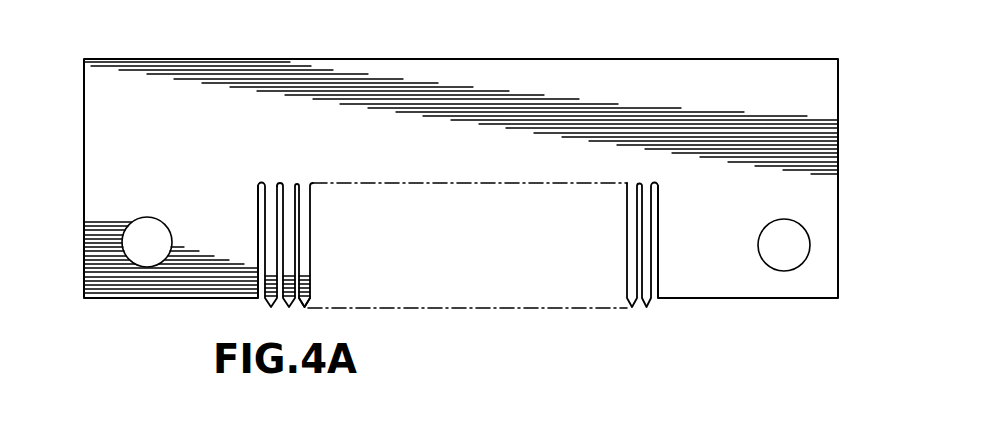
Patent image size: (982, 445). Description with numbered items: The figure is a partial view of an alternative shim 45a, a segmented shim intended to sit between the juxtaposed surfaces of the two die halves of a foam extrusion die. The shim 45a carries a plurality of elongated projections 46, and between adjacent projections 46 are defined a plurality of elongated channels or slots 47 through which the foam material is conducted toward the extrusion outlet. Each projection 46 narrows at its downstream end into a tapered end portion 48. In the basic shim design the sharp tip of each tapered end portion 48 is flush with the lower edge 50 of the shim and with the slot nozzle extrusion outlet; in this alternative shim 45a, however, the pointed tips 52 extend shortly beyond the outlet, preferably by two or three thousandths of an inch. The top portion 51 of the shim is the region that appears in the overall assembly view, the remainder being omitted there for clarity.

The alternative shim 45a is at (456, 51).
The elongated projections 46 is at (283, 223).
The elongated channels or slots 47 is at (262, 209).
The downstream tapered end portion 48 is at (308, 300).
The lower edge of the shim 50 is at (208, 297).
The top portion of the shim 51 is at (390, 155).
The pointed tips 52 is at (304, 310).